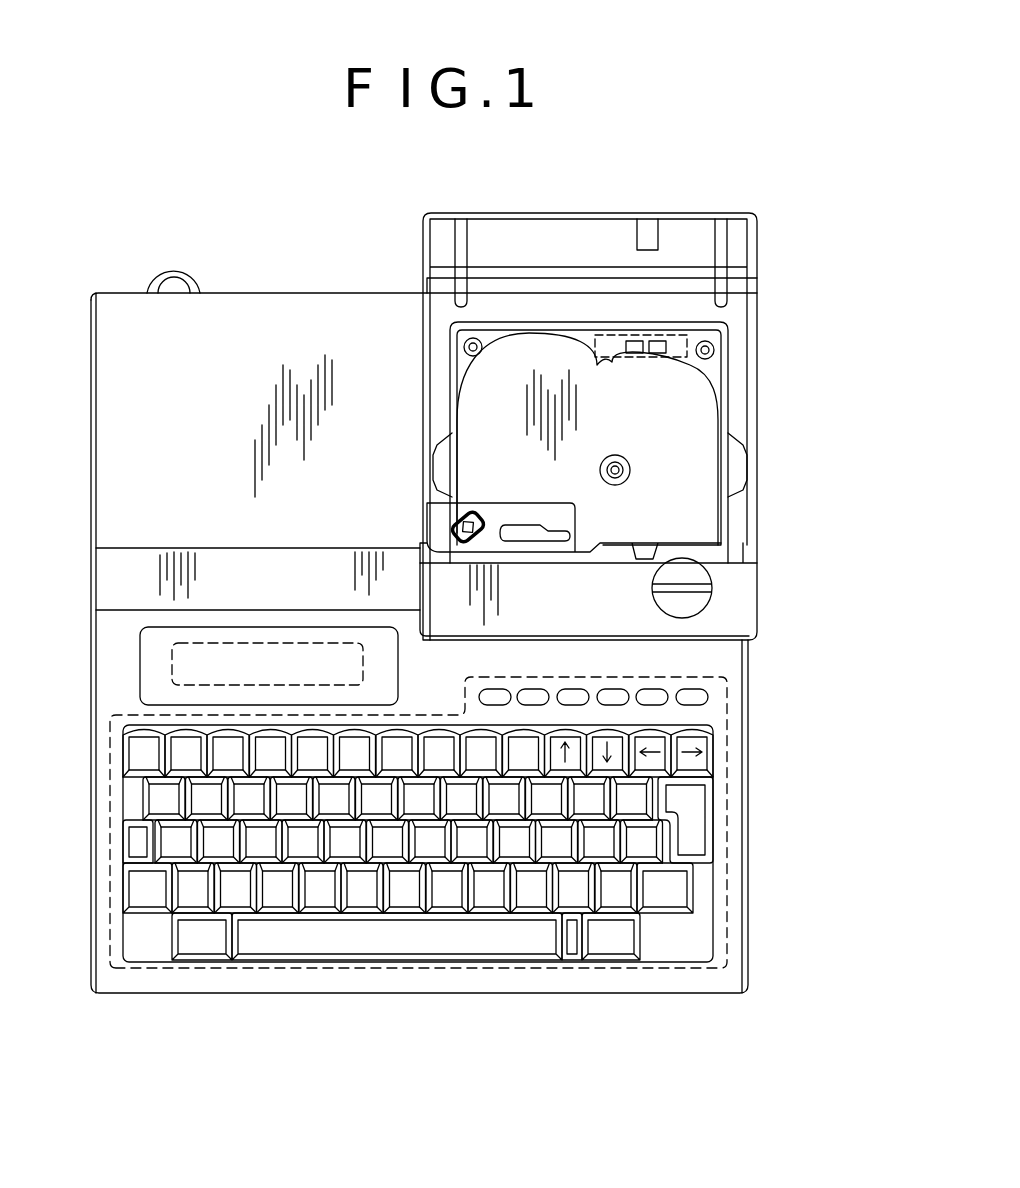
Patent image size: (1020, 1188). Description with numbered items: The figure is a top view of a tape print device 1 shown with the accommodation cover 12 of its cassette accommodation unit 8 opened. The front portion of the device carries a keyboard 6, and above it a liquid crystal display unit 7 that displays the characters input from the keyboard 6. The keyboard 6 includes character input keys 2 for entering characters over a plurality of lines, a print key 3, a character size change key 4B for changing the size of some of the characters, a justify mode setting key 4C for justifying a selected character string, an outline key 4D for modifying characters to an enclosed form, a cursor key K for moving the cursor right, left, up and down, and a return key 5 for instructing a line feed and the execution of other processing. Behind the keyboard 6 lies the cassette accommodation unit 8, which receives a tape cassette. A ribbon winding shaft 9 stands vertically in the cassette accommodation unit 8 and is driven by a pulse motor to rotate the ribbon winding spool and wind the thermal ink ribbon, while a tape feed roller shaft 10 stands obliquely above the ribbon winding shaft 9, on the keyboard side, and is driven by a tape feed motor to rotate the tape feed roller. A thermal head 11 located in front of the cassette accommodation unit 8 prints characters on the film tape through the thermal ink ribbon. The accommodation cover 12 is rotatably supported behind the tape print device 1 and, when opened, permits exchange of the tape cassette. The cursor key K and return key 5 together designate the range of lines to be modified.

The tape print device 1 is at (411, 279).
The accommodation cover 12 is at (710, 213).
The cassette accommodation unit 8 is at (710, 410).
The ribbon winding shaft 9 is at (624, 481).
The tape feed roller shaft 10 is at (450, 532).
The thermal head 11 is at (520, 525).
The liquid crystal display unit 7 is at (172, 662).
The outline key 4D is at (527, 689).
The justify mode setting key 4C is at (575, 690).
The character size change key 4B is at (613, 689).
The print key 3 is at (693, 690).
The cursor key K is at (658, 720).
The keyboard 6 is at (725, 800).
The character input keys 2 is at (603, 848).
The return key 5 is at (698, 850).